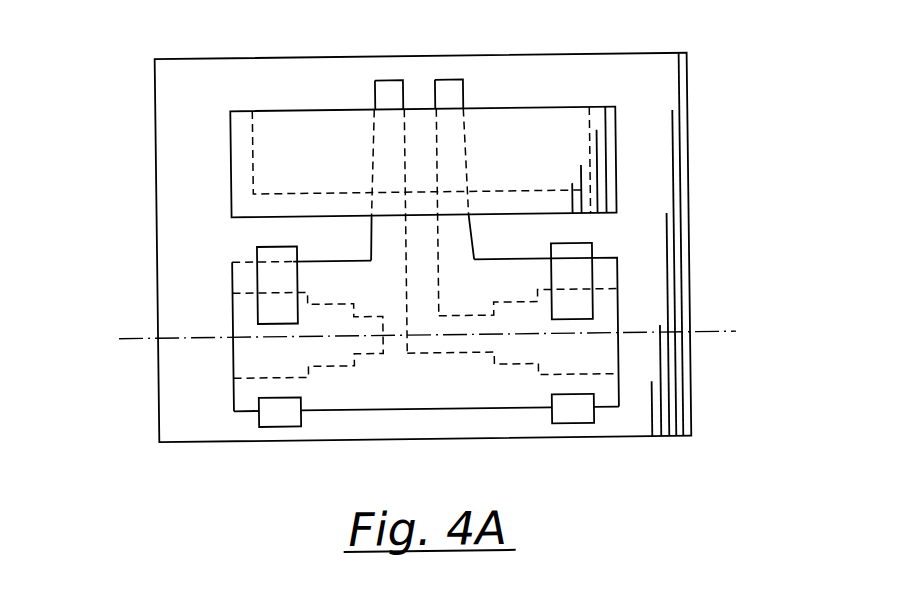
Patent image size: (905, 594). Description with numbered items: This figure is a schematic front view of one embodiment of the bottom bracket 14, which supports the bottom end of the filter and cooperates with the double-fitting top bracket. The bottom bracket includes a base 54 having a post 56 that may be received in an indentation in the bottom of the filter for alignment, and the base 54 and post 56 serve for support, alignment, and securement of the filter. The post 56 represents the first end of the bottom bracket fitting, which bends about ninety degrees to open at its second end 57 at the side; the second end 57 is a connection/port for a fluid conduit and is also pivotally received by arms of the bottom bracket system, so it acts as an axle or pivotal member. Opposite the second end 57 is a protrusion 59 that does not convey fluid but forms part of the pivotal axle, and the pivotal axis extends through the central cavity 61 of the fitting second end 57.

The bottom bracket 14 is at (148, 48).
The base 54 is at (242, 166).
The post 56 is at (455, 95).
The second end 57 is at (618, 317).
The protrusion 59 is at (232, 390).
The central cavity 61 is at (590, 359).